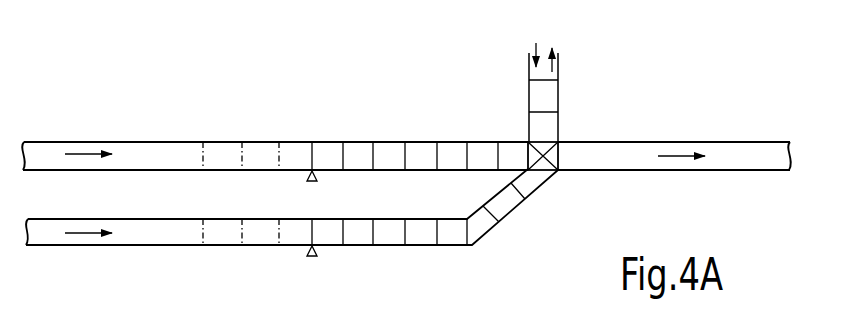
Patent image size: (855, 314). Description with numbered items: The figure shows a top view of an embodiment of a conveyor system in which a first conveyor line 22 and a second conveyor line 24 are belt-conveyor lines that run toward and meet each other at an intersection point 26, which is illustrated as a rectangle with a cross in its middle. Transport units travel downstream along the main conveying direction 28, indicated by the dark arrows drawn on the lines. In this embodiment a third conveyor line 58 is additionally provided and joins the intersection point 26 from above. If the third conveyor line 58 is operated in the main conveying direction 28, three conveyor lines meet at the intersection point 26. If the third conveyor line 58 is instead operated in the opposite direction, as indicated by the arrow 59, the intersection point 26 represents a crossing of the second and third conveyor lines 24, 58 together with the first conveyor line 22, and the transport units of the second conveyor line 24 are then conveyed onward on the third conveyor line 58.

The first conveyor line 22 is at (174, 165).
The second conveyor line 24 is at (172, 243).
The intersection point 26 is at (568, 186).
The conveying direction 28 is at (529, 53).
The third conveyor line 58 is at (586, 82).
The arrow 59 is at (558, 58).